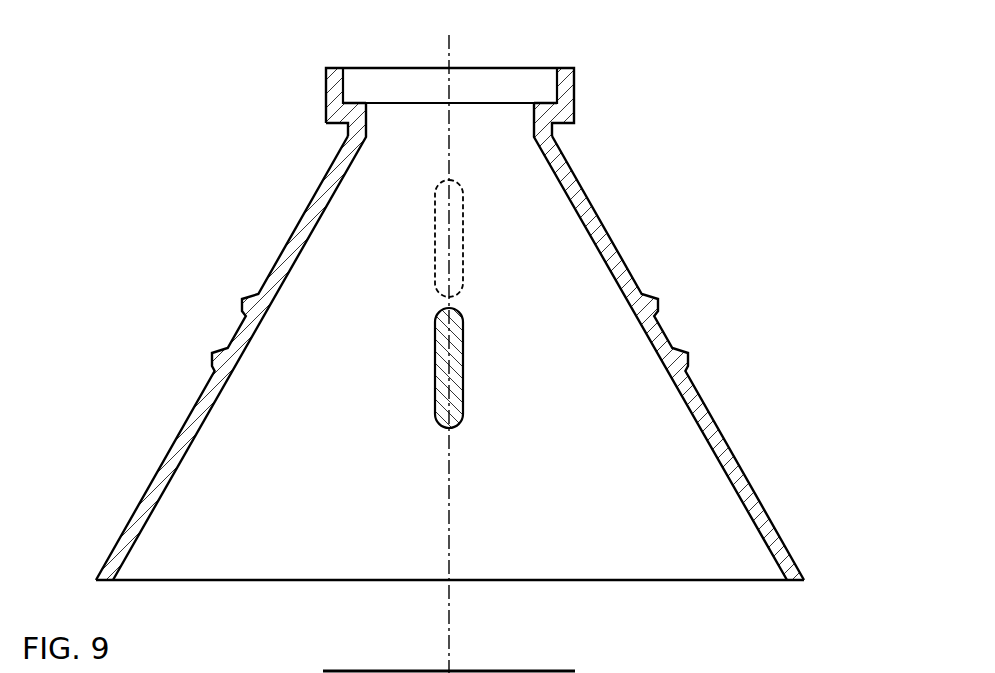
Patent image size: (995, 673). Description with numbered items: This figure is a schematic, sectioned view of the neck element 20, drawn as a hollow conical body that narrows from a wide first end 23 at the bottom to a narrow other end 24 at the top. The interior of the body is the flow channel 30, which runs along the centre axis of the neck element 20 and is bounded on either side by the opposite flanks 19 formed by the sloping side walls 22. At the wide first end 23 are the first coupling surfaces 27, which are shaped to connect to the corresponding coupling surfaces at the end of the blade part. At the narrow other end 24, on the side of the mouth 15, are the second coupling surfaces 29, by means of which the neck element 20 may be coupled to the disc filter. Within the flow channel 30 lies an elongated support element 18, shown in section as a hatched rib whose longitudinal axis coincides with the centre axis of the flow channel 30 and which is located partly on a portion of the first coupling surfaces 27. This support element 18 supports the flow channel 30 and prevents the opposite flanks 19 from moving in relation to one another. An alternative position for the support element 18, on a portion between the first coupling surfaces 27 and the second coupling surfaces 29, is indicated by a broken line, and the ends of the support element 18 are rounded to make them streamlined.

The mouth 15 is at (499, 653).
The support element 18 is at (442, 377).
The opposite flanks 19 is at (355, 275).
The neck element 20 is at (777, 242).
The conical side wall 22 is at (205, 397).
The first end 23 is at (715, 590).
The other end 24 is at (620, 66).
The first coupling surfaces 27 is at (234, 399).
The second coupling surfaces 29 is at (342, 88).
The flow channel 30 is at (544, 208).